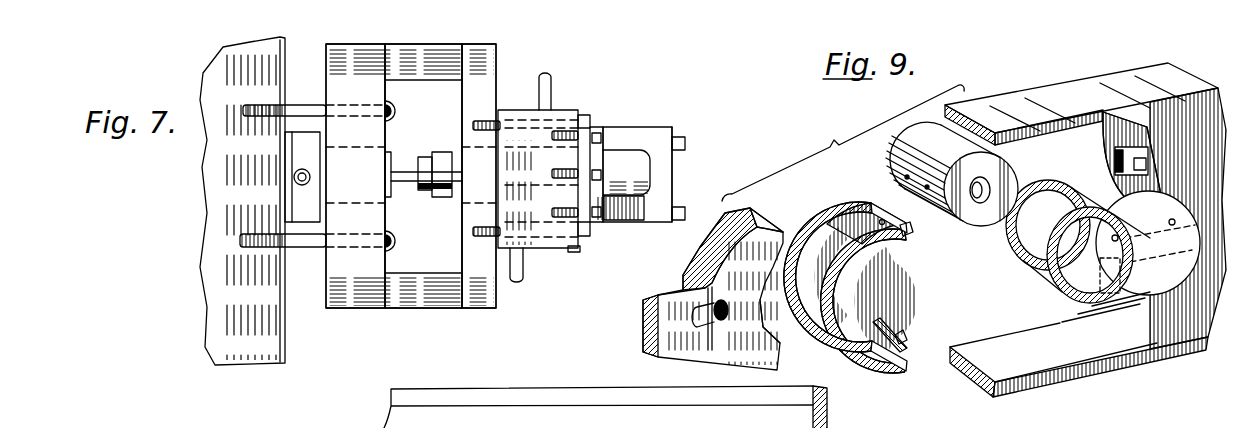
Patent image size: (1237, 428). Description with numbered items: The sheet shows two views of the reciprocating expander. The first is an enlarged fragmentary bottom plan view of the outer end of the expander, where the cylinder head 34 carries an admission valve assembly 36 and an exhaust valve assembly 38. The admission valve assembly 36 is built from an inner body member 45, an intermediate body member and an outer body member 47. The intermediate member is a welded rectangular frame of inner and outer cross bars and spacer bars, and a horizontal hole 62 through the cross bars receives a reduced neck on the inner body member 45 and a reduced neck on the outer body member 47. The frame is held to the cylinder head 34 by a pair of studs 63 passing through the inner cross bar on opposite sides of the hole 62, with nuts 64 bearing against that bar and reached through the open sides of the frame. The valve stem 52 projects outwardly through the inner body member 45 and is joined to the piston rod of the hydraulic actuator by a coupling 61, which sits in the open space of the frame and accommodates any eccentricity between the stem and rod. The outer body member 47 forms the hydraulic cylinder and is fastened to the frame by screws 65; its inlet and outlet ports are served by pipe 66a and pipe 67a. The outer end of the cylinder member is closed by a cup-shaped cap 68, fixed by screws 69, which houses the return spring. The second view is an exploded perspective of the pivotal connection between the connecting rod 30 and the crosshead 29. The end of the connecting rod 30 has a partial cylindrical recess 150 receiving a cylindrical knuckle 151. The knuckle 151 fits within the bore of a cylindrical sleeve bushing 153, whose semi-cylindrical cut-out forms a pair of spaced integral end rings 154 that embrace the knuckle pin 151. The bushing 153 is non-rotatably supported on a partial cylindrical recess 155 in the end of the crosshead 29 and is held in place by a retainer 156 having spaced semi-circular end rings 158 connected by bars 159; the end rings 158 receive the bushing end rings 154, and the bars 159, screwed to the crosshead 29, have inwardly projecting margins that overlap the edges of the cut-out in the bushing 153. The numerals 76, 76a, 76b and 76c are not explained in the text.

In FIG. 9, the crosshead 29 is at (1137, 39).
In FIG. 9, the connecting rod 30 is at (658, 292).
In FIG. 7, the cylinder head 34 is at (286, 353).
In FIG. 7, the admission valve assembly 36 is at (637, 200).
In FIG. 7, the exhaust valve assembly 38 is at (681, 166).
In FIG. 7, the inner body member 45 is at (326, 196).
In FIG. 7, the outer body member 47 is at (578, 251).
In FIG. 7, the valve stem 52 is at (406, 182).
In FIG. 7, the coupling 61 is at (441, 147).
In FIG. 7, the hole 62 is at (338, 148).
In FIG. 7, the studs 63 is at (300, 103).
In FIG. 7, the nuts 64 is at (397, 104).
In FIG. 7, the screws 65 is at (520, 111).
In FIG. 7, the pipe 66a is at (524, 277).
In FIG. 7, the pipe 67a is at (552, 86).
In FIG. 7, the cup-shaped cap 68 is at (635, 150).
In FIG. 7, the screws 69 is at (599, 134).
In FIG. 7, the housing 76 is at (359, 40).
In FIG. 7, the housing side plate 76a is at (358, 300).
In FIG. 7, the housing side plate 76b is at (482, 307).
In FIG. 7, the housing spacer 76c is at (422, 43).
In FIG. 9, the partial cylindrical recess 150 is at (778, 336).
In FIG. 9, the cylindrical knuckle 151 is at (889, 154).
In FIG. 9, the cylindrical sleeve bushing 153 is at (1138, 255).
In FIG. 9, the end rings 154 is at (1052, 288).
In FIG. 9, the partial cylindrical recess 155 is at (1147, 210).
In FIG. 9, the retainer 156 is at (885, 299).
In FIG. 9, the semi-circular end rings 158 is at (863, 340).
In FIG. 9, the bars 159 is at (921, 239).